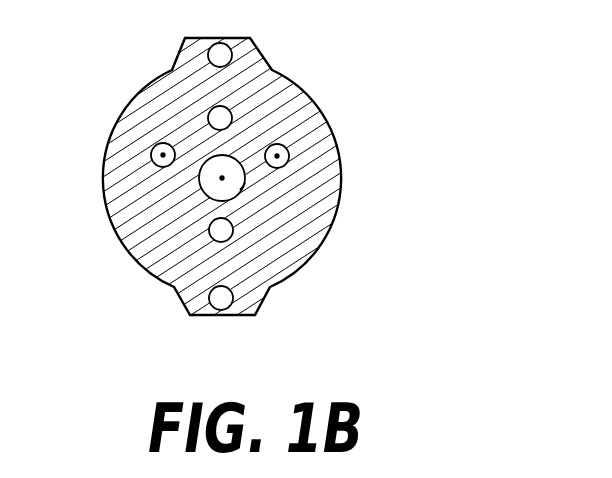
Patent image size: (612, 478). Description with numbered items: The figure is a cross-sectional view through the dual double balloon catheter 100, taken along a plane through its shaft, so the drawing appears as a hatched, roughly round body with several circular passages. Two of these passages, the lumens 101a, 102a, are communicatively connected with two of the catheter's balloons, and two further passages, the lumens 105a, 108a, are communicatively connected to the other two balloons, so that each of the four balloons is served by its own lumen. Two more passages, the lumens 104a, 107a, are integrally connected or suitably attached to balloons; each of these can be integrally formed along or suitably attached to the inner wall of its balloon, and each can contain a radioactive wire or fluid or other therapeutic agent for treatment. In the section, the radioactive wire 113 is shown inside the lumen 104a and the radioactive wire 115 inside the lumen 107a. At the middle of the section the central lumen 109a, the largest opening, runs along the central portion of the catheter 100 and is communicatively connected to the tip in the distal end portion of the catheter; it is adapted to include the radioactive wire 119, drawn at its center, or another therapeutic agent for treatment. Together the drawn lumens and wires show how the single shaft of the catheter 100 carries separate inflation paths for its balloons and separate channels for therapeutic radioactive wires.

The dual double balloon catheter 100 is at (436, 188).
The lumen 101a is at (225, 298).
The lumen 102a is at (215, 230).
The lumen 104a is at (156, 147).
The lumen 105a is at (227, 55).
The lumen 107a is at (287, 146).
The lumen 108a is at (223, 113).
The central lumen 109a is at (245, 183).
The radioactive wire 113 is at (163, 155).
The radioactive wire 115 is at (278, 157).
The radioactive wire 119 is at (222, 178).